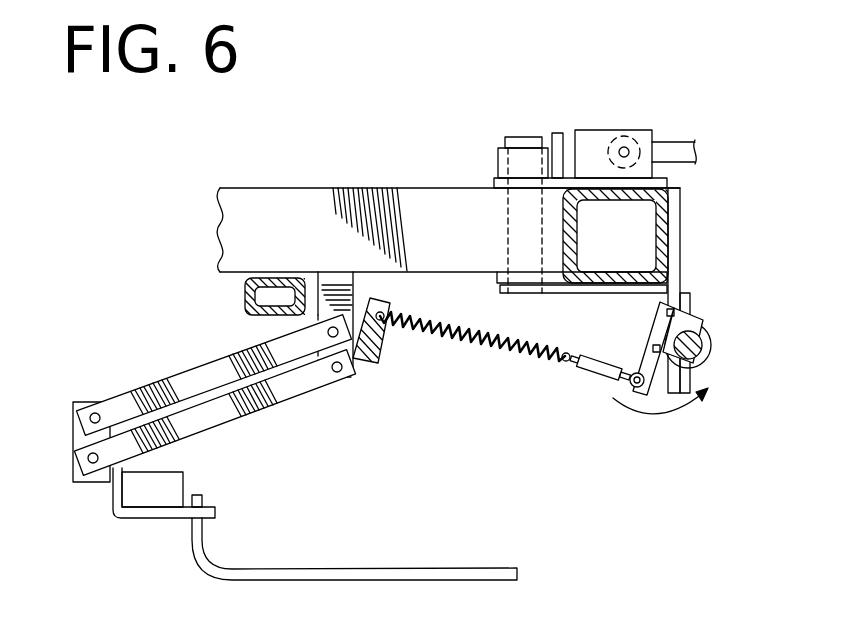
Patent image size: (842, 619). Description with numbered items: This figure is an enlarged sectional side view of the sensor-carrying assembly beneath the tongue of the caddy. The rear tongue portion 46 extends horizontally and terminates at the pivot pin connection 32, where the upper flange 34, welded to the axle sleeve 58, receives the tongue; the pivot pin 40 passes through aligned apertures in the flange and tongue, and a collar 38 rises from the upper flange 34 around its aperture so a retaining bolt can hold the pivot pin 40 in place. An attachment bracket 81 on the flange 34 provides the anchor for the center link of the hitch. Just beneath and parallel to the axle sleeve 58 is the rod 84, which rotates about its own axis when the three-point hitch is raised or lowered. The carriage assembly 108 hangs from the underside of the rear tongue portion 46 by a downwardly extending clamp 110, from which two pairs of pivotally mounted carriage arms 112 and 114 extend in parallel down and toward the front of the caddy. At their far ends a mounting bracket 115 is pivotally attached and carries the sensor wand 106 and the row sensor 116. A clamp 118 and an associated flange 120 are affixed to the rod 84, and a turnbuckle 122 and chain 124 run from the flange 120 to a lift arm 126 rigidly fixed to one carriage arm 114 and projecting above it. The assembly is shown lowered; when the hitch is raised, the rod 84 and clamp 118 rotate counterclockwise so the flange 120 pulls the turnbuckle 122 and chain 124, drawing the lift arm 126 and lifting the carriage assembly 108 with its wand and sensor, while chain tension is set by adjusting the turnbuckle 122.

The pivot pin connection 32 is at (514, 122).
The upper flange 34 is at (563, 178).
The collar 38 is at (497, 165).
The pivot pin 40 is at (530, 137).
The rear tongue portion 46 is at (320, 188).
The axle sleeve 58 is at (678, 210).
The attachment bracket 81 is at (623, 130).
The rod 84 is at (709, 343).
The sensor wand 106 is at (390, 570).
The carriage assembly 108 is at (250, 428).
The clamp 110 is at (358, 283).
The carriage arm 112 is at (198, 380).
The carriage arm 114 is at (298, 383).
The mounting bracket 115 is at (110, 500).
The row sensor 116 is at (153, 488).
The clamp 118 is at (693, 317).
The flange 120 is at (647, 357).
The turnbuckle 122 is at (606, 380).
The chain 124 is at (507, 352).
The lift arm 126 is at (391, 340).